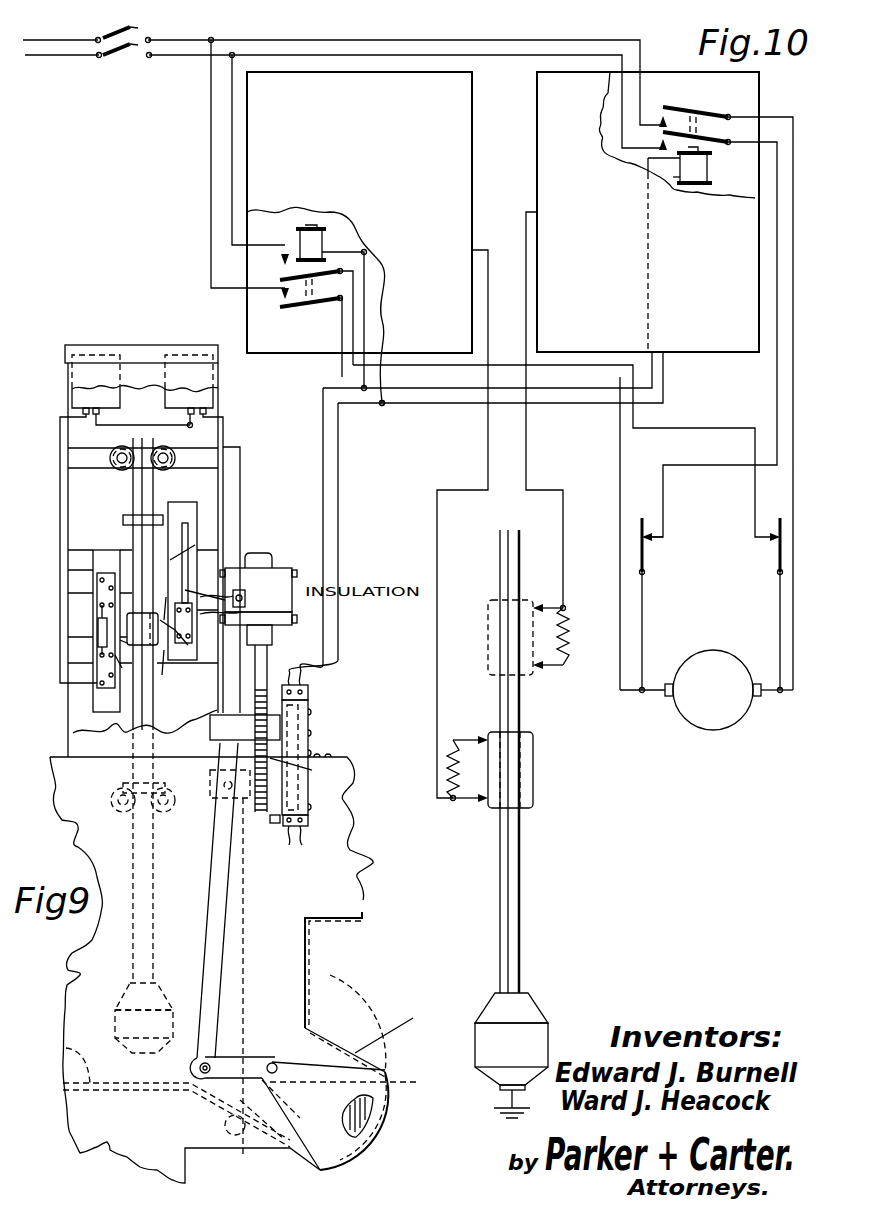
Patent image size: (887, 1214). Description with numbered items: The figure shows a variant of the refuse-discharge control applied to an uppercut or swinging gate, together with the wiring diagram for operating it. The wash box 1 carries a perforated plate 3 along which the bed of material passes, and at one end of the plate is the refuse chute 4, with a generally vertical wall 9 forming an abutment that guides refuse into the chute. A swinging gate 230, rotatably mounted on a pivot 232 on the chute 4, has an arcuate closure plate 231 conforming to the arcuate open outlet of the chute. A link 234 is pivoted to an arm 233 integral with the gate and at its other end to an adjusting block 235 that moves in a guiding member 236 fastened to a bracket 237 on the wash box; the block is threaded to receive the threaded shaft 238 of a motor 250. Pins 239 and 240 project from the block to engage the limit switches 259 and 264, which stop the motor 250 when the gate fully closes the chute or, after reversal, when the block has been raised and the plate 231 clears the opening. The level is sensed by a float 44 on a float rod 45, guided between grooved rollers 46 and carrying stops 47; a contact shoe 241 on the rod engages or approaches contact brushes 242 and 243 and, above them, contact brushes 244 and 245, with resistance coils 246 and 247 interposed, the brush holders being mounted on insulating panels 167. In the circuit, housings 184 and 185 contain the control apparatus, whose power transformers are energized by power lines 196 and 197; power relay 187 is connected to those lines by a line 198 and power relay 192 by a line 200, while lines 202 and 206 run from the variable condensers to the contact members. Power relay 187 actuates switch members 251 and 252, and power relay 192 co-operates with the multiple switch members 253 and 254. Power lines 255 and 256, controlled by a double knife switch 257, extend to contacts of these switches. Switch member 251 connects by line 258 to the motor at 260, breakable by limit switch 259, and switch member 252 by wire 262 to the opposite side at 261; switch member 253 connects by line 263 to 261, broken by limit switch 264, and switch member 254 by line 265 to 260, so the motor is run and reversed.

In FIG. 9, the wash box 1 is at (312, 955).
In FIG. 9, the perforated plate 3 is at (63, 1060).
In FIG. 9, the refuse chute 4 is at (388, 1030).
In FIG. 9, the vertical wall 9 is at (305, 980).
In FIG. 10, the float 44 is at (500, 1010).
In FIG. 9, the float 44 is at (115, 1025).
In FIG. 10, the float rod 45 is at (519, 885).
In FIG. 9, the float rod 45 is at (133, 495).
In FIG. 9, the grooved rollers 46 is at (118, 447).
In FIG. 9, the stops 47 is at (123, 520).
In FIG. 9, the insulating panels 167 is at (178, 503).
In FIG. 10, the housing 184 is at (472, 105).
In FIG. 9, the housing 184 is at (72, 400).
In FIG. 10, the housing 185 is at (537, 182).
In FIG. 9, the housing 185 is at (213, 392).
In FIG. 10, the power relay 187 is at (310, 250).
In FIG. 10, the power relay 192 is at (696, 183).
In FIG. 10, the power line 196 is at (382, 280).
In FIG. 10, the power line 197 is at (382, 403).
In FIG. 10, the line 198 is at (370, 210).
In FIG. 10, the line 200 is at (670, 195).
In FIG. 10, the line 202 is at (488, 447).
In FIG. 9, the line 202 is at (60, 447).
In FIG. 10, the line 206 is at (526, 432).
In FIG. 9, the line 206 is at (240, 442).
In FIG. 9, the swinging gate 230 is at (370, 965).
In FIG. 9, the arcuate closure plate 231 is at (375, 1002).
In FIG. 9, the pivot 232 is at (275, 1063).
In FIG. 9, the arm 233 is at (232, 1066).
In FIG. 9, the link 234 is at (215, 903).
In FIG. 9, the adjusting block 235 is at (215, 745).
In FIG. 9, the guiding member 236 is at (308, 722).
In FIG. 9, the bracket 237 is at (308, 740).
In FIG. 9, the threaded shaft 238 is at (267, 658).
In FIG. 9, the pin 239 is at (268, 835).
In FIG. 9, the pin 240 is at (250, 772).
In FIG. 10, the contact shoe 241 is at (488, 610).
In FIG. 9, the contact shoe 241 is at (140, 630).
In FIG. 10, the contact brush 242 is at (482, 805).
In FIG. 9, the contact brush 242 is at (110, 670).
In FIG. 10, the contact brush 243 is at (470, 728).
In FIG. 9, the contact brush 243 is at (128, 610).
In FIG. 10, the contact brush 244 is at (540, 668).
In FIG. 9, the contact brush 244 is at (165, 662).
In FIG. 10, the contact brush 245 is at (540, 605).
In FIG. 9, the contact brush 245 is at (195, 545).
In FIG. 10, the resistance coil 246 is at (447, 770).
In FIG. 9, the resistance coil 246 is at (98, 620).
In FIG. 10, the resistance coil 247 is at (566, 635).
In FIG. 9, the resistance coil 247 is at (225, 600).
In FIG. 10, the motor 250 is at (722, 730).
In FIG. 9, the motor 250 is at (268, 592).
In FIG. 10, the switch member 251 is at (282, 278).
In FIG. 10, the switch member 252 is at (292, 305).
In FIG. 10, the switch member 253 is at (705, 135).
In FIG. 10, the switch member 254 is at (678, 106).
In FIG. 10, the power line 255 is at (68, 42).
In FIG. 10, the power line 256 is at (68, 62).
In FIG. 10, the double knife switch 257 is at (120, 60).
In FIG. 10, the line 258 is at (718, 418).
In FIG. 10, the limit switch 259 is at (778, 560).
In FIG. 9, the limit switch 259 is at (308, 821).
In FIG. 10, the motor winding connection 260 is at (760, 698).
In FIG. 10, the motor winding connection 261 is at (668, 698).
In FIG. 10, the wire 262 is at (630, 572).
In FIG. 10, the line 263 is at (698, 480).
In FIG. 10, the limit switch 264 is at (645, 562).
In FIG. 9, the limit switch 264 is at (308, 692).
In FIG. 10, the line 265 is at (780, 112).